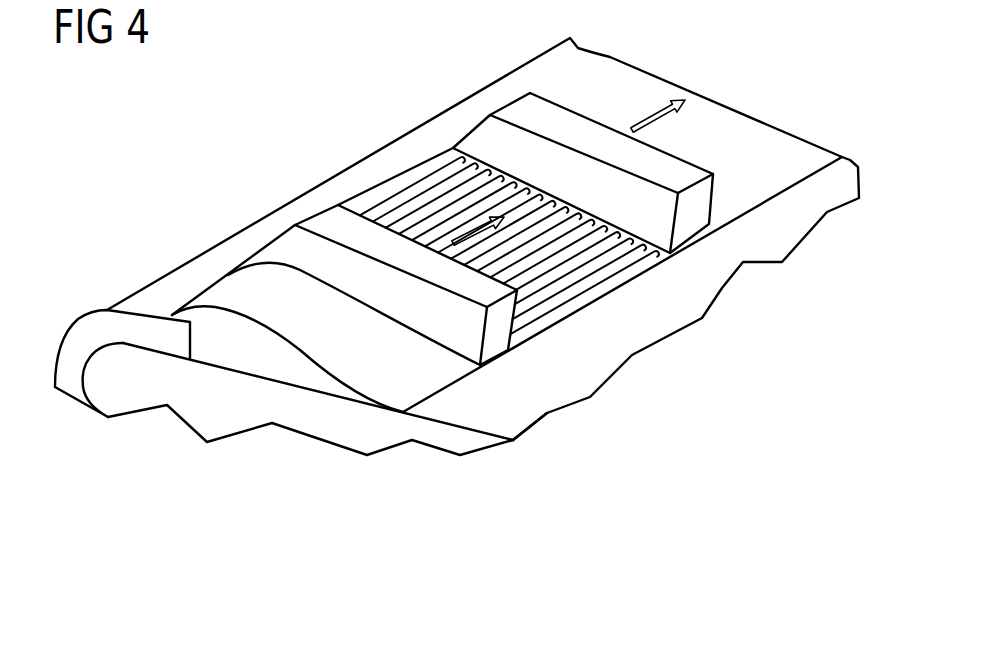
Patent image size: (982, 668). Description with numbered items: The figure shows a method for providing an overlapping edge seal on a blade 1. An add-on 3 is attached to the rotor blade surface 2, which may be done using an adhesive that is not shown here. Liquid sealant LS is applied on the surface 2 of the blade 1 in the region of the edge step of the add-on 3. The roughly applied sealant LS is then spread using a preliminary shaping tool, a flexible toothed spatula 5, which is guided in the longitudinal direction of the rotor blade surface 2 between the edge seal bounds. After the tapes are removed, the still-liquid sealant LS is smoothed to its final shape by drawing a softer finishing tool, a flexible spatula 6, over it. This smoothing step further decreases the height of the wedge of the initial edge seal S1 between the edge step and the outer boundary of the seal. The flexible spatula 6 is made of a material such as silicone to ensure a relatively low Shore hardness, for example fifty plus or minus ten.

The blade 1 is at (569, 446).
The rotor blade surface 2 is at (840, 177).
The add-on 3 is at (215, 262).
The flexible toothed spatula 5 is at (520, 113).
The flexible spatula 6 is at (327, 230).
The initial edge seal S1 is at (265, 305).
The liquid sealant LS is at (742, 133).